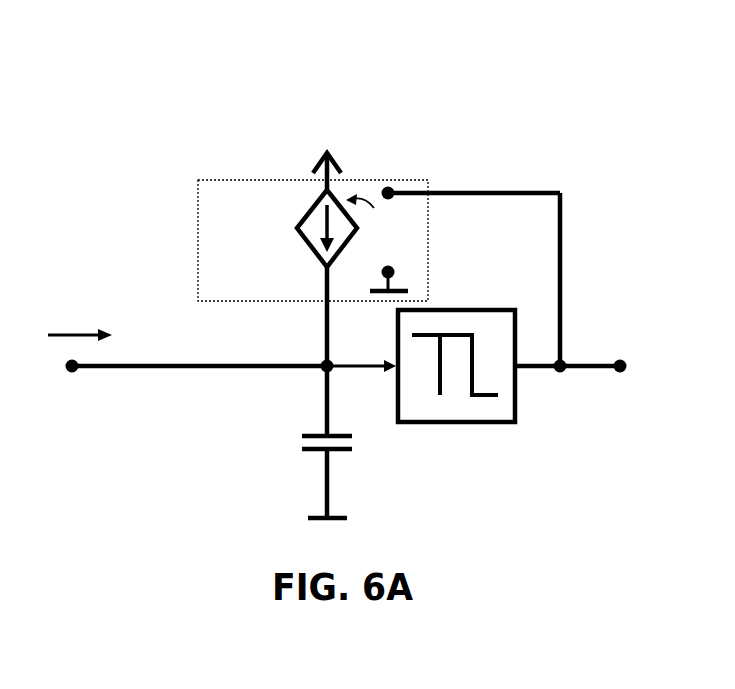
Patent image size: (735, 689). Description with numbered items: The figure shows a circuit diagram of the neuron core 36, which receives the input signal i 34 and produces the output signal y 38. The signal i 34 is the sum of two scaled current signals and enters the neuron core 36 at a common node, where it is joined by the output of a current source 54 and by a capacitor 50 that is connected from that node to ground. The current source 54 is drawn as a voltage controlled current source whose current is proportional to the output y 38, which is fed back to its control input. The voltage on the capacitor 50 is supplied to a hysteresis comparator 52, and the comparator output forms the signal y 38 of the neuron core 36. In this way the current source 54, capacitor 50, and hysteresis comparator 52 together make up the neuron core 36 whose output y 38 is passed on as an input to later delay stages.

The signal i 34 is at (72, 283).
The neuron core 36 is at (436, 78).
The signal y 38 is at (617, 318).
The capacitor 50 is at (293, 447).
The hysteresis comparator 52 is at (515, 408).
The current source 54 is at (333, 192).